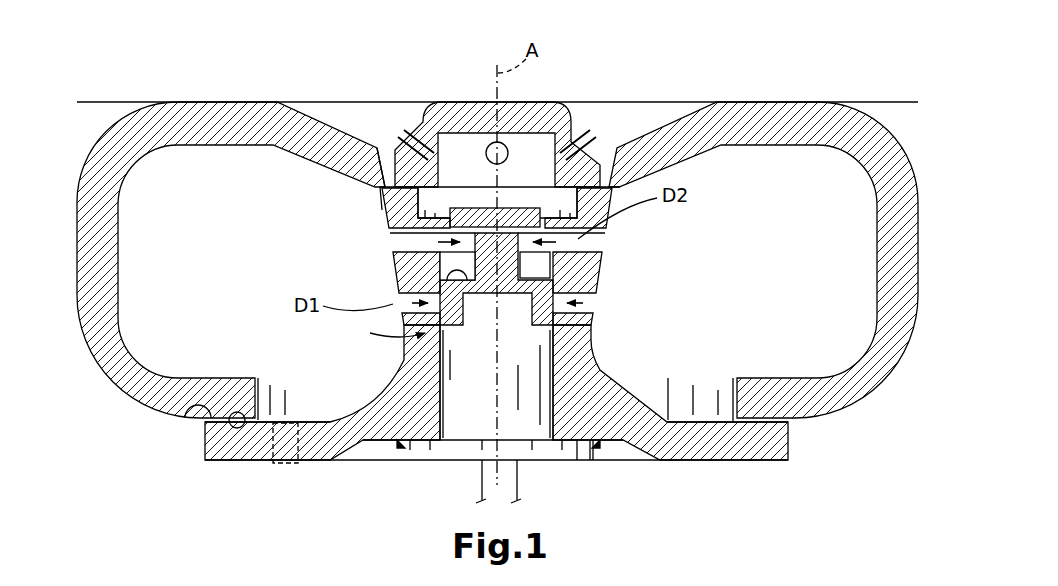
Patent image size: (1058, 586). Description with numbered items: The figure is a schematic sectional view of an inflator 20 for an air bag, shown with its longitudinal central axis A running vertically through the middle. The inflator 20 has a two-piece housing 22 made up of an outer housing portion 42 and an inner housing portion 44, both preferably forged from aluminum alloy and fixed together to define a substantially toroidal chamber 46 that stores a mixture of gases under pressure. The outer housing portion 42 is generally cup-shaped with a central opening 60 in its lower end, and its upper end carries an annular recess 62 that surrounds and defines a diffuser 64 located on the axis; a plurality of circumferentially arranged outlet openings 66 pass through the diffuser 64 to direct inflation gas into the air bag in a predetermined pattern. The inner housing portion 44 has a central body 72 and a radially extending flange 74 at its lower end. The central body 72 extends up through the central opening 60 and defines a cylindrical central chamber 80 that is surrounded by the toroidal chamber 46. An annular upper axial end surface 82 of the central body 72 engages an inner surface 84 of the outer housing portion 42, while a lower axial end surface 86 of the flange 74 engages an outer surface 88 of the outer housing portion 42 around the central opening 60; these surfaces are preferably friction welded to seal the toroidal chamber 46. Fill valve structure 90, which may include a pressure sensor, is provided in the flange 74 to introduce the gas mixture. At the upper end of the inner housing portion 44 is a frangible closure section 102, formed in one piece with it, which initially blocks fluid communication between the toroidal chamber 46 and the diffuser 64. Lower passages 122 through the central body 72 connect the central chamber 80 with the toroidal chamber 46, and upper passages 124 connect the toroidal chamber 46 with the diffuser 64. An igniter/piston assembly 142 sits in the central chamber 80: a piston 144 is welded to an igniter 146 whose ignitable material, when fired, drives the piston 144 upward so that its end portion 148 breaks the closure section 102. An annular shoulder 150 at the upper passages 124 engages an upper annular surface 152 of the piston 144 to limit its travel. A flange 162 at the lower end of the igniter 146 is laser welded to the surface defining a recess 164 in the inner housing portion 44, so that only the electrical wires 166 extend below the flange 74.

The inflator 20 is at (619, 70).
The housing 22 is at (795, 425).
The outer housing portion 42 is at (832, 398).
The inner housing portion 44 is at (752, 468).
The toroidal chamber 46 is at (790, 198).
The central opening 60 is at (733, 390).
The annular recess 62 is at (350, 118).
The diffuser 64 is at (472, 116).
The outlet openings 66 is at (379, 118).
The central body 72 is at (572, 349).
The flange 74 is at (707, 448).
The central chamber 80 is at (535, 265).
The upper axial end surface 82 is at (385, 220).
The inner surface 84 is at (385, 196).
The lower axial end surface 86 is at (190, 409).
The outer surface 88 is at (237, 412).
The fill valve structure 90 is at (288, 465).
The frangible closure section 102 is at (512, 212).
The lower passages 122 is at (590, 305).
The upper passages 124 is at (598, 249).
The igniter/piston assembly 142 is at (376, 335).
The piston 144 is at (440, 283).
The igniter 146 is at (453, 400).
The end portion 148 is at (452, 232).
The annular shoulder 150 is at (600, 238).
The upper annular surface 152 is at (468, 329).
The flange 162 is at (573, 449).
The recess 164 is at (625, 442).
The electrical wires 166 is at (484, 475).